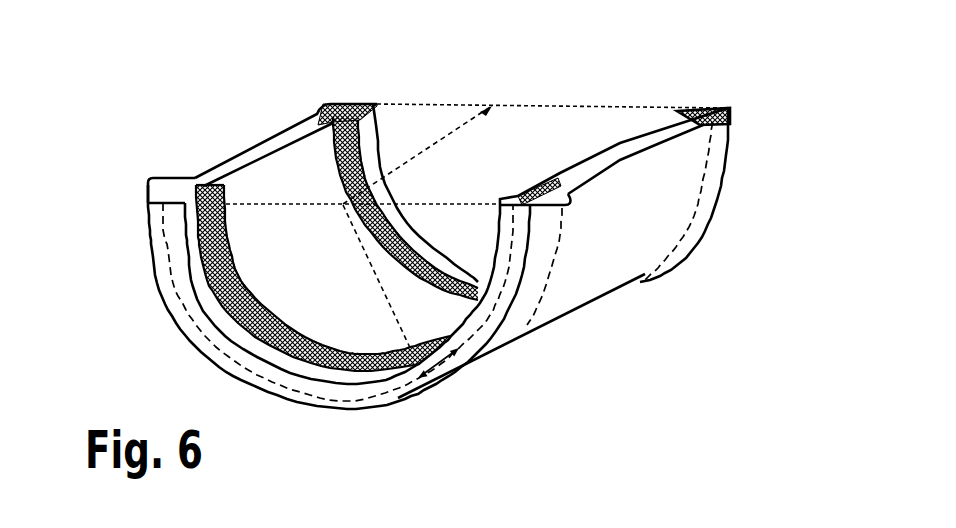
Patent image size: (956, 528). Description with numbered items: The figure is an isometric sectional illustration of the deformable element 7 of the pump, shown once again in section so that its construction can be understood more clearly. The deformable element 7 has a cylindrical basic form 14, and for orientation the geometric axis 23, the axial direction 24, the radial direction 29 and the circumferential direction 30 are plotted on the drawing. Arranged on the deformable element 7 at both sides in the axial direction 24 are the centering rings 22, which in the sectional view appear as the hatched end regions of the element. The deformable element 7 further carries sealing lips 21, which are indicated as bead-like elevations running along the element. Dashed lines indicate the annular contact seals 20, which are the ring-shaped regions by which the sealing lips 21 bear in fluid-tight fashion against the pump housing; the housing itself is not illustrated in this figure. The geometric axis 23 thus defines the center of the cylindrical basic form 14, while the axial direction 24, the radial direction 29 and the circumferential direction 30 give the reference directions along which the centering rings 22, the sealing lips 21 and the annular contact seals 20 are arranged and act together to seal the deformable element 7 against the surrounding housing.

The deformable element 7 is at (215, 113).
The cylindrical basic form 14 is at (166, 178).
The annular contact seal 20 is at (320, 103).
The sealing lip 21 is at (730, 118).
The centering ring 22 is at (194, 240).
The geometric axis 23 is at (470, 128).
The axial direction 24 is at (433, 138).
The radial direction 29 is at (372, 260).
The circumferential direction 30 is at (432, 366).